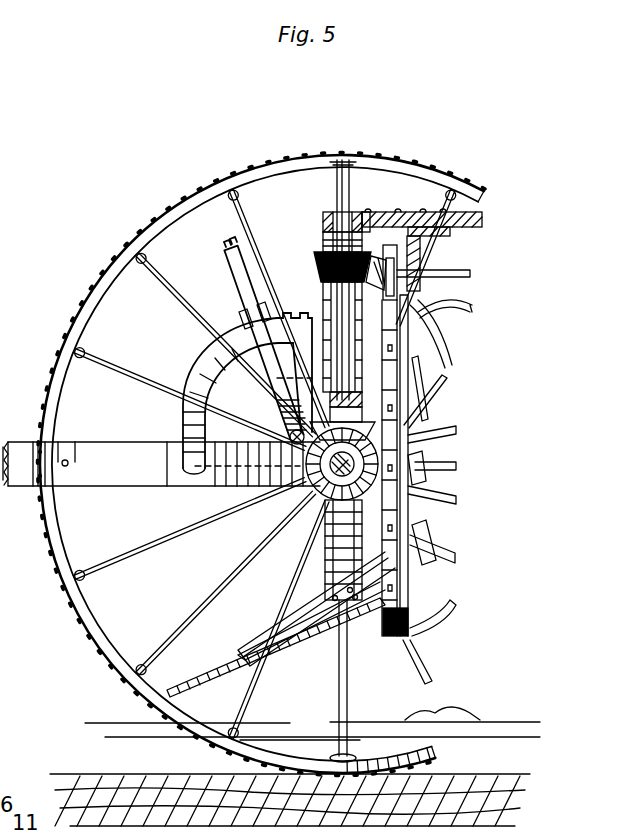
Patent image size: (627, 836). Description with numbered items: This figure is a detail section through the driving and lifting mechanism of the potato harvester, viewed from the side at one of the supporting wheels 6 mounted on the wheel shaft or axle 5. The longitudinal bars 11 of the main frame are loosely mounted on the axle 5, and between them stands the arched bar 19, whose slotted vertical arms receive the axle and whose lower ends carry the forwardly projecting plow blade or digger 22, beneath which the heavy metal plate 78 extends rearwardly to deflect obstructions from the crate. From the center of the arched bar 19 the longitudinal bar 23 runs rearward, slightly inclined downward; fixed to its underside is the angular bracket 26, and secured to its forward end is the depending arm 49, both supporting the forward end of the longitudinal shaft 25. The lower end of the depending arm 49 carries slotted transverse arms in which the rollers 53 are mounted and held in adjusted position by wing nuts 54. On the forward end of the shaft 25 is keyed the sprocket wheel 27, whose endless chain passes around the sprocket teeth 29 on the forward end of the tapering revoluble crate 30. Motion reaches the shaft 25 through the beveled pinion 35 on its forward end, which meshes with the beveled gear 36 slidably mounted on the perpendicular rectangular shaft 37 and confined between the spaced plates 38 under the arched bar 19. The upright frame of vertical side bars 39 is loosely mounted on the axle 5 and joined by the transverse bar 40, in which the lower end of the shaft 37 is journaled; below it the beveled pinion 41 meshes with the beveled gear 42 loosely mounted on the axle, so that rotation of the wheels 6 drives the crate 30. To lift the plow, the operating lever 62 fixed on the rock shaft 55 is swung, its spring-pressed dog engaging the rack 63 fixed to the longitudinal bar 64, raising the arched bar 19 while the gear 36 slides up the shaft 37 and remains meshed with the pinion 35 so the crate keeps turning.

The wheel shaft or axle 5 is at (300, 503).
The supporting wheel 6 is at (100, 652).
The longitudinal bar of the main frame 11 is at (25, 484).
The arched bar 19 is at (340, 568).
The plow blade or digger 22 is at (262, 642).
The longitudinal bar 23 is at (424, 214).
The longitudinal shaft 25 is at (470, 274).
The angular bracket 26 is at (420, 258).
The sprocket wheel 27 is at (427, 292).
The sprocket teeth 29 is at (442, 381).
The revoluble crate 30 is at (412, 531).
The beveled pinion 35 is at (389, 250).
The beveled gear 36 is at (318, 262).
The perpendicular rectangular shaft 37 is at (341, 210).
The spaced plates 38 is at (323, 224).
The vertical side bar 39 is at (326, 297).
The transverse bar 40 is at (290, 404).
The beveled pinion 41 is at (456, 432).
The beveled gear 42 is at (333, 549).
The depending arm 49 is at (365, 212).
The roller 53 is at (392, 353).
The wing nut 54 is at (412, 396).
The rock shaft 55 is at (288, 448).
The operating lever 62 is at (232, 285).
The rack 63 is at (207, 370).
The longitudinal bar 64 is at (148, 484).
The heavy metal plate 78 is at (292, 654).